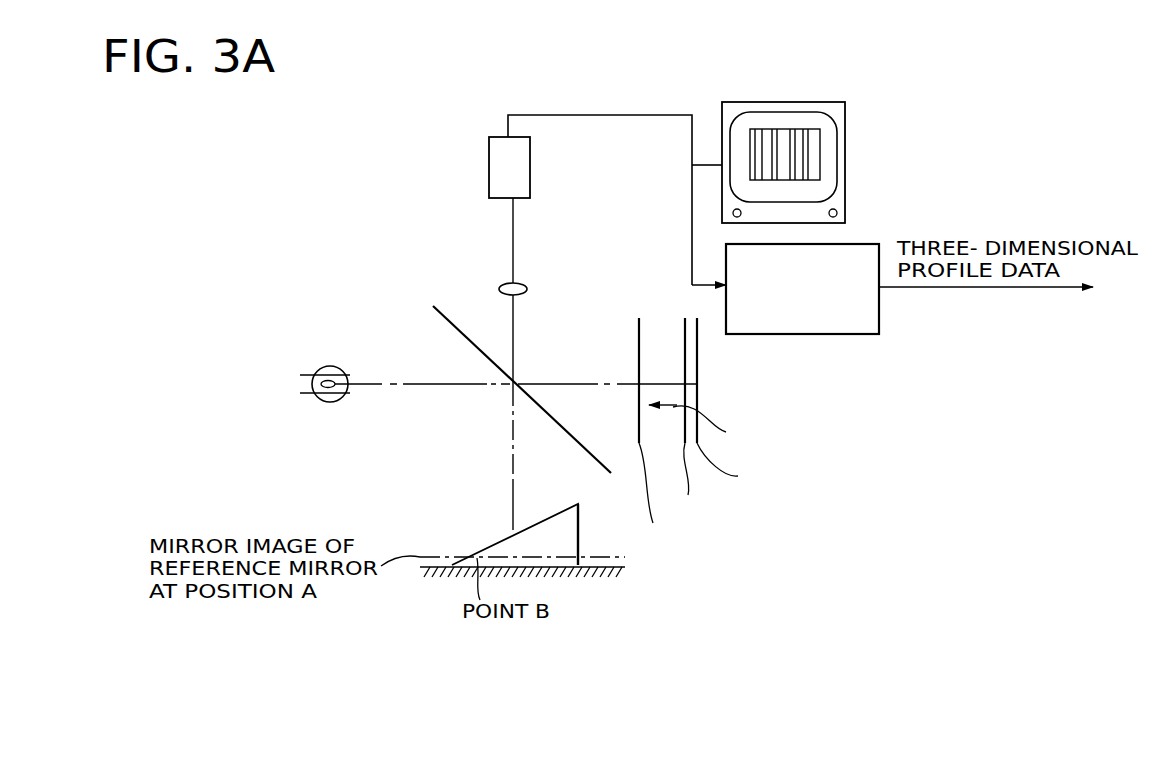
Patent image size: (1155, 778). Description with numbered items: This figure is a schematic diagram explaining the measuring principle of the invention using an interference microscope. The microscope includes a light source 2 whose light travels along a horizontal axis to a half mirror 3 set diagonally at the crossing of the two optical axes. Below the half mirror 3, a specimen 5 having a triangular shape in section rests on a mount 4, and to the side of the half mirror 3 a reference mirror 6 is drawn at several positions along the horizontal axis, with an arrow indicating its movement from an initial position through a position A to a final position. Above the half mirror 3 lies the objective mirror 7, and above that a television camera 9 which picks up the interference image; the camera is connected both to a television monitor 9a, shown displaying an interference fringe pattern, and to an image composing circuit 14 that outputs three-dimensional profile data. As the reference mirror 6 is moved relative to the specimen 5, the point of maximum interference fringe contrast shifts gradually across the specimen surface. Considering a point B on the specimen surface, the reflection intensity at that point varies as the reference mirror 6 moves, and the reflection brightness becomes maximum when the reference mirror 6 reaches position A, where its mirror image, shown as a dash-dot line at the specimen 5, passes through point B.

The light source 2 is at (318, 372).
The half mirror 3 is at (437, 317).
The mount 4 is at (598, 568).
The specimen 5 is at (503, 540).
The reference mirror 6 is at (697, 395).
The objective mirror 7 is at (498, 289).
The television camera 9 is at (490, 168).
The television monitor 9a is at (845, 108).
The image composing circuit 14 is at (879, 308).